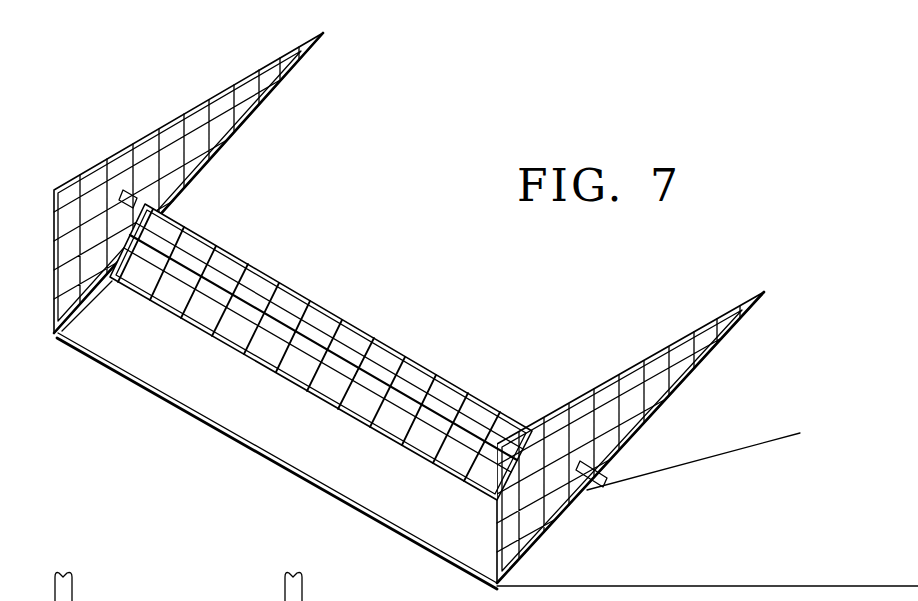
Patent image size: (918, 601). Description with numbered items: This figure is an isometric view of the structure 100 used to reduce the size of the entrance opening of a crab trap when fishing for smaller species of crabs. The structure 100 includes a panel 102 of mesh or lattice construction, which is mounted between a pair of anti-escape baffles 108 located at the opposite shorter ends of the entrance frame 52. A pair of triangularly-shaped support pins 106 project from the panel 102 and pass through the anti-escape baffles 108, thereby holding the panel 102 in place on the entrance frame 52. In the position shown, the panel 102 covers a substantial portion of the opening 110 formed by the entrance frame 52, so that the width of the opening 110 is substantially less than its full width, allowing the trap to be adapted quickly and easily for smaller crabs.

The entrance frame 52 is at (207, 423).
The structure 100 is at (317, 405).
The panel 102 is at (368, 333).
The support pins 106 is at (124, 200).
The anti-escape baffles 108 is at (172, 121).
The opening 110 is at (177, 361).